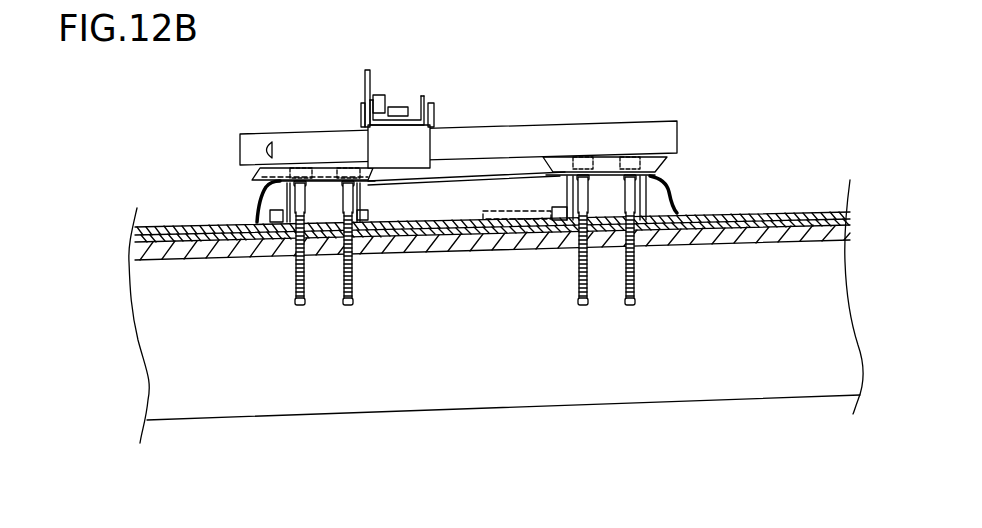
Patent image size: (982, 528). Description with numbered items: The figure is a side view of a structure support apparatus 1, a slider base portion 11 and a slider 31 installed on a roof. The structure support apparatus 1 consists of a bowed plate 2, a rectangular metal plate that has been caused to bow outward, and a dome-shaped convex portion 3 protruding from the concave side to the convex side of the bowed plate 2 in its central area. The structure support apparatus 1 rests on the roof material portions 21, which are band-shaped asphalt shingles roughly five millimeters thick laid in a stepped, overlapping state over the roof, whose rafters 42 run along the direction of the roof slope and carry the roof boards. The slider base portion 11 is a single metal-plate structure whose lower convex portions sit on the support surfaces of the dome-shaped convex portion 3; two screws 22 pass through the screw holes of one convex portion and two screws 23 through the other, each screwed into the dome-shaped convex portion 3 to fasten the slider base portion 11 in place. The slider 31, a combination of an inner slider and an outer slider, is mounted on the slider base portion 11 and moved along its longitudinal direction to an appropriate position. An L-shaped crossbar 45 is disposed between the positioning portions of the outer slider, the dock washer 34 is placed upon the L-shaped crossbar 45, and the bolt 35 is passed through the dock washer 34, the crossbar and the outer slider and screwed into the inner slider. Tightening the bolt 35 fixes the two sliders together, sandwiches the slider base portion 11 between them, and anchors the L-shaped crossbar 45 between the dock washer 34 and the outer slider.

The structure support apparatus 1 is at (668, 184).
The bowed plate 2 is at (203, 223).
The dome-shaped convex portion 3 is at (262, 198).
The slider base portion 11 is at (575, 123).
The roof material portions 21 is at (767, 210).
The screws 22 is at (348, 307).
The screws 23 is at (630, 307).
The slider 31 is at (437, 115).
The dock washer 34 is at (379, 95).
The bolt 35 is at (404, 106).
The rafters 42 is at (438, 387).
The L-shaped crossbar 45 is at (364, 80).